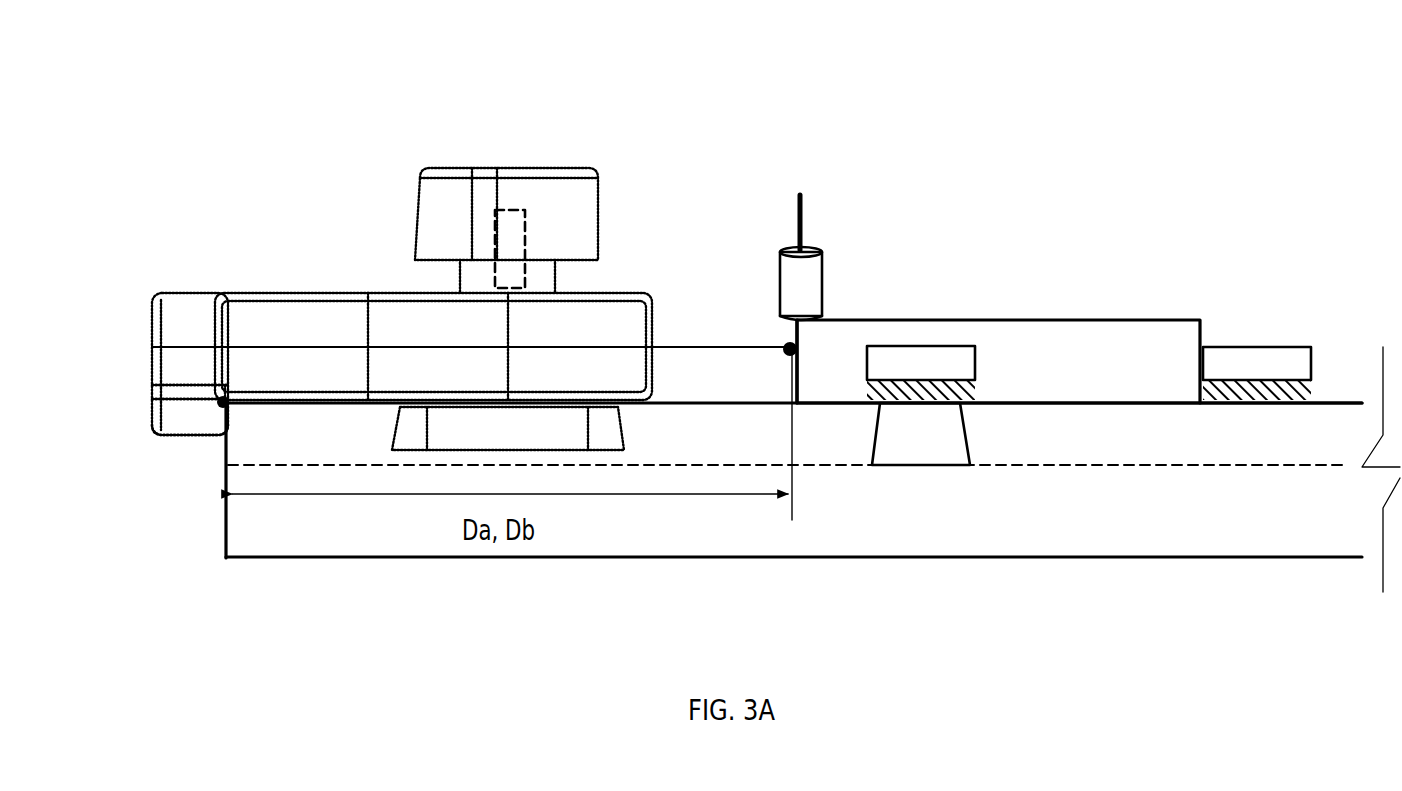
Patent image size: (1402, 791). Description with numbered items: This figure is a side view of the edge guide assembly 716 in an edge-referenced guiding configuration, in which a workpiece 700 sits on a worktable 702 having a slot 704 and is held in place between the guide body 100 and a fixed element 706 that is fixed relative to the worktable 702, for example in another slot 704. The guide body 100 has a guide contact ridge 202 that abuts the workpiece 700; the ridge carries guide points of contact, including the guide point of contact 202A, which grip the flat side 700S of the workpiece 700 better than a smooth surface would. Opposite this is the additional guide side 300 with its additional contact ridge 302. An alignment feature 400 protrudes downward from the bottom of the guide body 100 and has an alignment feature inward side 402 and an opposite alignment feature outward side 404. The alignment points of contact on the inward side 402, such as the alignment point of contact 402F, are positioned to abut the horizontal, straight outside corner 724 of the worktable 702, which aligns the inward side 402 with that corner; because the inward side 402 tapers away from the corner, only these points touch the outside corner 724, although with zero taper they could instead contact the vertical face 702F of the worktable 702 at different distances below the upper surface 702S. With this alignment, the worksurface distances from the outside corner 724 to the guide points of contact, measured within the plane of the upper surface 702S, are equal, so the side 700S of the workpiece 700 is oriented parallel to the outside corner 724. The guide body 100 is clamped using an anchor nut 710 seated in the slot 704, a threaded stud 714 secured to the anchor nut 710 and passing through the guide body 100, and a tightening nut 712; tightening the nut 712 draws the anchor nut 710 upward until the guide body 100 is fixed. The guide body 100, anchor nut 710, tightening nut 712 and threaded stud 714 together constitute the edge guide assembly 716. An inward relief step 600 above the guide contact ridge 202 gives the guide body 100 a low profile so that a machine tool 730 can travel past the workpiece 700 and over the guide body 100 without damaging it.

The guide body 100 is at (182, 245).
The guide contact ridge 202 is at (778, 362).
The guide point of contact 202A is at (785, 345).
The additional guide side 300 is at (145, 305).
The additional contact ridge 302 is at (152, 347).
The alignment feature 400 is at (185, 428).
The alignment feature inward side 402 is at (216, 418).
The alignment point of contact 402F is at (232, 393).
The alignment feature outward side 404 is at (150, 409).
The inward relief step 600 is at (677, 300).
The workpiece 700 is at (998, 361).
The side of the workpiece 700S is at (799, 334).
The worktable 702 is at (813, 469).
The face of the worktable 702F is at (225, 528).
The upper surface of the worktable 702S is at (1345, 408).
The slot 704 is at (1001, 434).
The fixed element 706 is at (962, 360).
The anchor nut 710 is at (508, 428).
The tightening nut 712 is at (506, 214).
The threaded stud 714 is at (493, 238).
The edge guide assembly 716 is at (400, 142).
The outside corner of the worktable 724 is at (232, 410).
The machine tool 730 is at (823, 282).